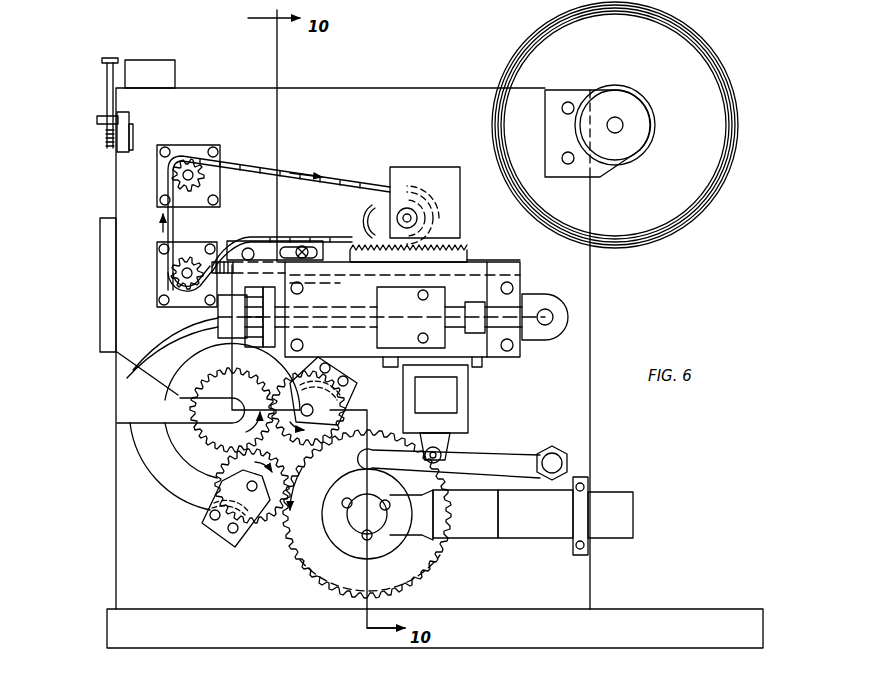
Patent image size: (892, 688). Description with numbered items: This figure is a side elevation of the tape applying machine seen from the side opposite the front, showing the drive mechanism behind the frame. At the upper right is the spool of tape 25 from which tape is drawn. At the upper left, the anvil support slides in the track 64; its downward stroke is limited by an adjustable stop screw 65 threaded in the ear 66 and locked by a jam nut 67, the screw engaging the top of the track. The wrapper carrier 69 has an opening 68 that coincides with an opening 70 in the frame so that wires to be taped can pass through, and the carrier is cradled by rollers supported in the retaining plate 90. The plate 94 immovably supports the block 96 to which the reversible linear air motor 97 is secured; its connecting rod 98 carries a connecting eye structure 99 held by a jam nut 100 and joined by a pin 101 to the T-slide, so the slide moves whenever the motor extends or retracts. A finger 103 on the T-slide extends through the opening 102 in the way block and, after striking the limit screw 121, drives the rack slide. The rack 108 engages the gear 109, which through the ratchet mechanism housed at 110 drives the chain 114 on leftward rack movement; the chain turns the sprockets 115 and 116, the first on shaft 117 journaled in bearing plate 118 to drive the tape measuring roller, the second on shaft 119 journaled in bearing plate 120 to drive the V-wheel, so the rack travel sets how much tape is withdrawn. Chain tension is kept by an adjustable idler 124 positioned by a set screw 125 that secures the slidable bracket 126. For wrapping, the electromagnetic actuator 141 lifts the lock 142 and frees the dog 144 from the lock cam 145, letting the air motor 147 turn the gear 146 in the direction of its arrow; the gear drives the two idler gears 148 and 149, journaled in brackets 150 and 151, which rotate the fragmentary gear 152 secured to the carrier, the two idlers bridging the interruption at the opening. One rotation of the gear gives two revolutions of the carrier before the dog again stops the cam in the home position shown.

The spool of tape 25 is at (532, 42).
The track 64 is at (100, 263).
The adjustable stop screw 65 is at (106, 72).
The ear 66 is at (108, 130).
The jam nut 67 is at (100, 120).
The opening 68 is at (176, 410).
The wrapper carrier 69 is at (162, 394).
The opening in frame 70 is at (120, 372).
The retaining plate 90 is at (172, 487).
The plate 94 is at (491, 290).
The block 96 is at (437, 340).
The air motor 97 is at (218, 317).
The connecting rod 98 is at (457, 326).
The connecting eye structure 99 is at (546, 296).
The jam nut 100 is at (469, 300).
The pin 101 is at (557, 318).
The opening 102 is at (378, 270).
The finger 103 is at (300, 278).
The rack 108 is at (463, 245).
The gear 109 is at (382, 226).
The ratchet mechanism housing 110 is at (381, 194).
The chain 114 is at (333, 183).
The sprocket 115 is at (206, 172).
The sprocket 116 is at (185, 258).
The shaft 117 is at (190, 170).
The bearing plate 118 is at (175, 145).
The shaft 119 is at (180, 274).
The bearing plate 120 is at (164, 252).
The limit screw 121 is at (222, 262).
The adjustable idler 124 is at (250, 240).
The set screw 125 is at (305, 247).
The bracket 126 is at (296, 246).
The electromagnetic actuator 141 is at (446, 402).
The lock 142 is at (517, 450).
The dog 144 is at (360, 460).
The lock cam 145 is at (369, 466).
The gear 146 is at (433, 572).
The air motor 147 is at (545, 522).
The idler gear 148 is at (270, 516).
The idler gear 149 is at (341, 408).
The bracket 150 is at (237, 506).
The bracket 151 is at (286, 393).
The fragmentary gear 152 is at (208, 438).